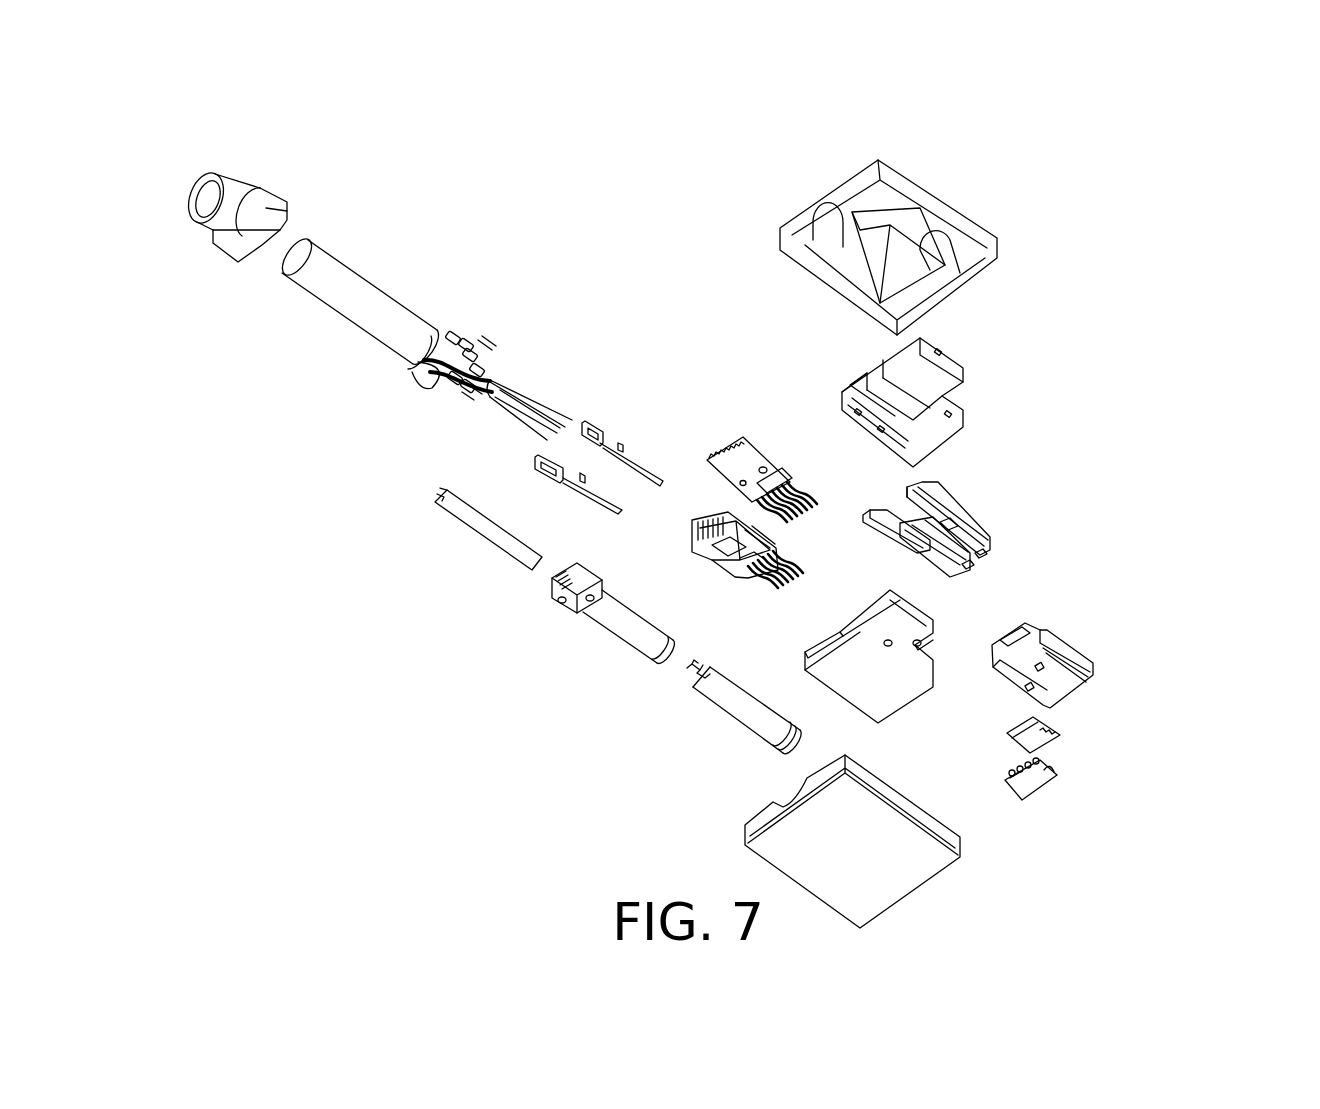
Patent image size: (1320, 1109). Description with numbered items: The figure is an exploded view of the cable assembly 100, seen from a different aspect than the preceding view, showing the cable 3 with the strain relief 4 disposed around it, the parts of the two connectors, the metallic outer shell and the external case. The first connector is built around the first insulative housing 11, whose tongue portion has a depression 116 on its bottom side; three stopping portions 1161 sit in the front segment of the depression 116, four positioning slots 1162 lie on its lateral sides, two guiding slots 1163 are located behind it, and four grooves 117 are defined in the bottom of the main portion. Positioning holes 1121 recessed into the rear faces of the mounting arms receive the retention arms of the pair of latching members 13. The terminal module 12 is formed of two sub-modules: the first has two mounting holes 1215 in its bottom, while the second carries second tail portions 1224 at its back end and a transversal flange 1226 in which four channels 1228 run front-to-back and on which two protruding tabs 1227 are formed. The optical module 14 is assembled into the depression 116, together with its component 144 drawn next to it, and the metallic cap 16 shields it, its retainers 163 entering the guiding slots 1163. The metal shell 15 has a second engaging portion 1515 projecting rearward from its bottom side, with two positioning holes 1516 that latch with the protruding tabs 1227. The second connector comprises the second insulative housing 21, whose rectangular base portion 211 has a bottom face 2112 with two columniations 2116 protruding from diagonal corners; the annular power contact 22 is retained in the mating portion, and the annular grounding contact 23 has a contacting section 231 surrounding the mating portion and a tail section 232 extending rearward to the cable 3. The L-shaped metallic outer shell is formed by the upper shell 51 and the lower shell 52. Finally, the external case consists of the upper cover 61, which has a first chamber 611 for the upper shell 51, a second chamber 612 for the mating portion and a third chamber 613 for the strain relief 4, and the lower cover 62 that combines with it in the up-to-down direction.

The cable assembly 100 is at (1135, 133).
The strain relief 4 is at (282, 178).
The cable 3 is at (410, 292).
The latching members 13 is at (632, 434).
The lower shell 52 is at (478, 541).
The second insulative housing 21 is at (568, 601).
The base portion 211 is at (590, 575).
The columniations 2116 is at (553, 603).
The bottom face 2112 is at (573, 605).
The terminal module 12 is at (722, 566).
The second tail portions 1224 is at (703, 533).
The transversal flange 1226 is at (710, 558).
The protruding tabs 1227 is at (733, 583).
The channels 1228 is at (757, 547).
The mounting holes 1215 is at (767, 470).
The annular grounding contact 23 is at (712, 711).
The contacting section 231 is at (733, 703).
The tail section 232 is at (690, 680).
The annular power contact 22 is at (862, 650).
The first insulative housing 11 is at (950, 524).
The guiding slots 1163 is at (938, 515).
The depression 116 is at (953, 540).
The grooves 117 is at (912, 523).
The positioning slots 1162 is at (983, 552).
The stopping portions 1161 is at (967, 565).
The positioning holes 1121 is at (868, 517).
The upper shell 51 is at (962, 347).
The upper cover 61 is at (897, 238).
The first chamber 611 is at (918, 227).
The second chamber 612 is at (958, 268).
The third chamber 613 is at (840, 207).
The metal shell 15 is at (1048, 652).
The second engaging portion 1515 is at (1028, 635).
The positioning holes 1516 is at (993, 665).
The optical module 14 is at (1053, 771).
The latch plate 144 is at (1040, 715).
The metallic cap 16 is at (1040, 782).
The retainers 163 is at (1010, 777).
The lower cover 62 is at (903, 783).